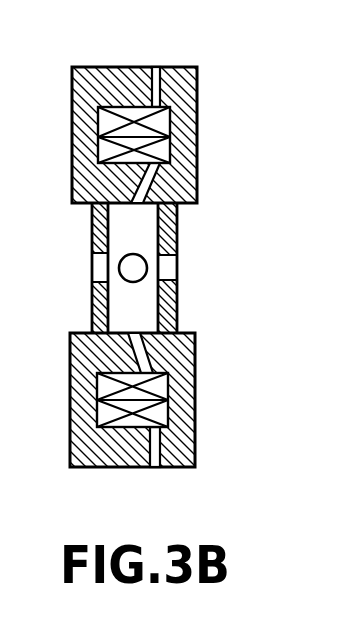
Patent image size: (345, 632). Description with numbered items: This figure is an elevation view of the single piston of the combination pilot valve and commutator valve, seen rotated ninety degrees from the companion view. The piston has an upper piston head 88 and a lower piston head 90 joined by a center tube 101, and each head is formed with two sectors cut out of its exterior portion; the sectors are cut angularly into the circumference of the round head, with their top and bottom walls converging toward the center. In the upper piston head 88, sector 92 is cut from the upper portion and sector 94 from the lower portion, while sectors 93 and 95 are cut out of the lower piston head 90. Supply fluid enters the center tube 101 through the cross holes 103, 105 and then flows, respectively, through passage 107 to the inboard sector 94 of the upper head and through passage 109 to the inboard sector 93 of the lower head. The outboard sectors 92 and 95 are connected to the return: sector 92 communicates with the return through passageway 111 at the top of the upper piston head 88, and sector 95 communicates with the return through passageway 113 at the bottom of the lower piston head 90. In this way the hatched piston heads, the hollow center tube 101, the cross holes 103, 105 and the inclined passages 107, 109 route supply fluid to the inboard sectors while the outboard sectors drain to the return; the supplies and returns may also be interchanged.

The upper piston head 88 is at (193, 112).
The lower piston head 90 is at (188, 375).
The sector 92 is at (123, 110).
The sector 93 is at (162, 388).
The sector 94 is at (157, 150).
The sector 95 is at (157, 413).
The center tube 101 is at (92, 235).
The cross hole 103 is at (133, 271).
The cross hole 105 is at (177, 258).
The passage 107 is at (156, 176).
The passage 109 is at (143, 362).
The passageway 111 is at (158, 67).
The passageway 113 is at (155, 457).